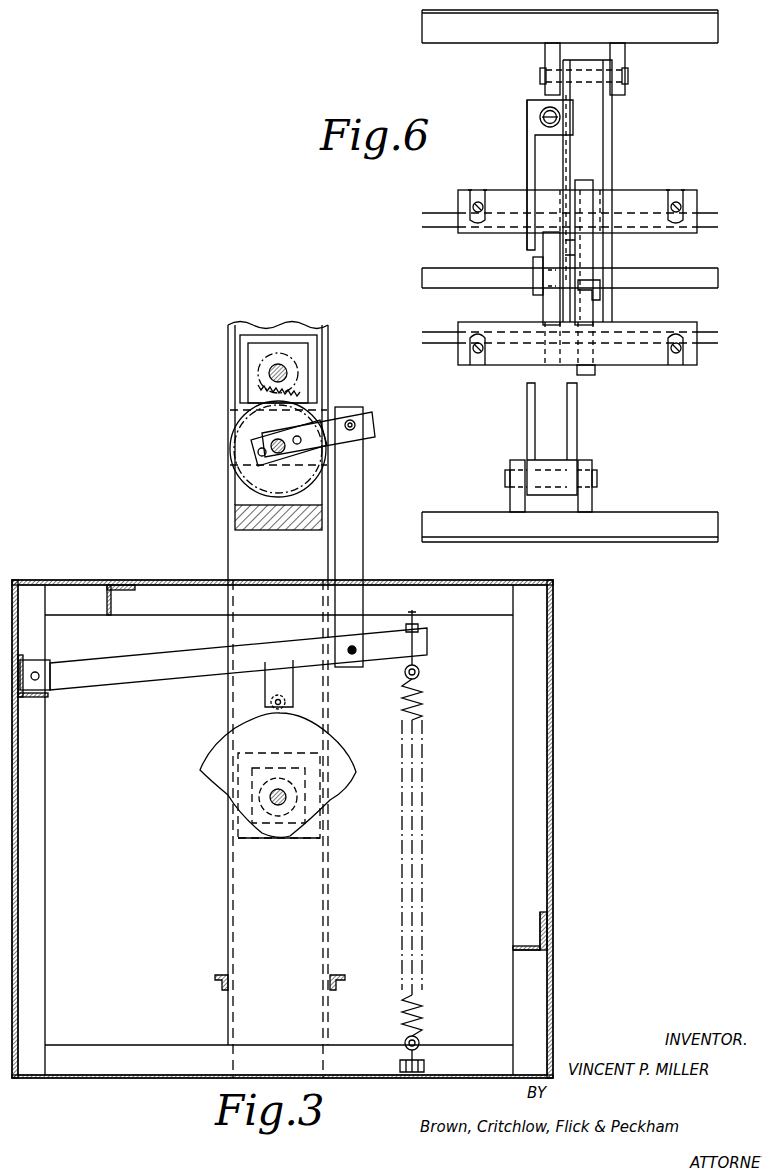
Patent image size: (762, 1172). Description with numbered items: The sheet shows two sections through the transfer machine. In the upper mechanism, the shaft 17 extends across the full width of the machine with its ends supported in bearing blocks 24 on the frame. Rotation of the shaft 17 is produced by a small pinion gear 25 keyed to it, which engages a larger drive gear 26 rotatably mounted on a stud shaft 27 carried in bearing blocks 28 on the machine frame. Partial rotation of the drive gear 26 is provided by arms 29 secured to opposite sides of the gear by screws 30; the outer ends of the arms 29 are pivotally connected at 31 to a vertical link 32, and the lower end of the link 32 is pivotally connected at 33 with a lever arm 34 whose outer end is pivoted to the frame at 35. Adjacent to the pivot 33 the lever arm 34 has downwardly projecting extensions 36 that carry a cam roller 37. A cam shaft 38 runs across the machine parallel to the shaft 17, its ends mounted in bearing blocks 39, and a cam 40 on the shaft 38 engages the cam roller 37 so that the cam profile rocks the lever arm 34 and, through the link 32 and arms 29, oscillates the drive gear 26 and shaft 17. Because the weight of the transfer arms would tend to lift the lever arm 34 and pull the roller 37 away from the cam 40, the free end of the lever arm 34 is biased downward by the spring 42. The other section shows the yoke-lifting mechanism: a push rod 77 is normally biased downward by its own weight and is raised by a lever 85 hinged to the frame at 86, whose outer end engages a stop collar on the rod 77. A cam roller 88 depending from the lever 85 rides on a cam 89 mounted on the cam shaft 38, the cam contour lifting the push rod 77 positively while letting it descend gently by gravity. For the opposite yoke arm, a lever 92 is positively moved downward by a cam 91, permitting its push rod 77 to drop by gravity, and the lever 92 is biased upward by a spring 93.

In FIG. 3, the shaft 17 is at (270, 373).
In FIG. 3, the bearing blocks 24 is at (322, 358).
In FIG. 3, the pinion gear 25 is at (262, 382).
In FIG. 3, the drive gear 26 is at (238, 447).
In FIG. 3, the stud shaft 27 is at (272, 460).
In FIG. 3, the bearing blocks 28 is at (318, 425).
In FIG. 3, the arms 29 is at (345, 445).
In FIG. 3, the screws 30 is at (301, 442).
In FIG. 3, the pivotal connection 31 is at (356, 422).
In FIG. 3, the vertical link 32 is at (363, 512).
In FIG. 3, the pivotal connection 33 is at (352, 654).
In FIG. 3, the lever arm 34 is at (130, 678).
In FIG. 3, the pivot 35 is at (39, 676).
In FIG. 3, the extensions 36 is at (265, 685).
In FIG. 3, the cam roller 37 is at (278, 709).
In FIG. 3, the cam shaft 38 is at (286, 795).
In FIG. 3, the bearing blocks 39 is at (314, 830).
In FIG. 3, the cam 40 is at (205, 775).
In FIG. 3, the spring 42 is at (422, 710).
In FIG. 6, the push rod 77 is at (470, 207).
In FIG. 6, the lever 85 is at (612, 135).
In FIG. 6, the hinge 86 is at (630, 77).
In FIG. 6, the cam roller 88 is at (592, 300).
In FIG. 6, the cam 89 is at (590, 250).
In FIG. 6, the cam 91 is at (543, 308).
In FIG. 6, the lever 92 is at (527, 163).
In FIG. 6, the spring 93 is at (540, 123).